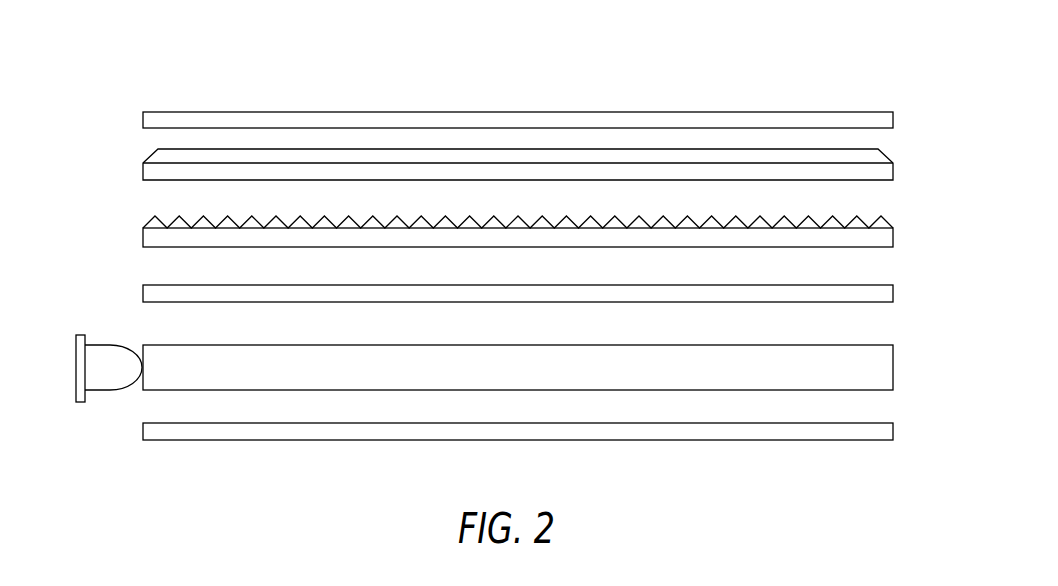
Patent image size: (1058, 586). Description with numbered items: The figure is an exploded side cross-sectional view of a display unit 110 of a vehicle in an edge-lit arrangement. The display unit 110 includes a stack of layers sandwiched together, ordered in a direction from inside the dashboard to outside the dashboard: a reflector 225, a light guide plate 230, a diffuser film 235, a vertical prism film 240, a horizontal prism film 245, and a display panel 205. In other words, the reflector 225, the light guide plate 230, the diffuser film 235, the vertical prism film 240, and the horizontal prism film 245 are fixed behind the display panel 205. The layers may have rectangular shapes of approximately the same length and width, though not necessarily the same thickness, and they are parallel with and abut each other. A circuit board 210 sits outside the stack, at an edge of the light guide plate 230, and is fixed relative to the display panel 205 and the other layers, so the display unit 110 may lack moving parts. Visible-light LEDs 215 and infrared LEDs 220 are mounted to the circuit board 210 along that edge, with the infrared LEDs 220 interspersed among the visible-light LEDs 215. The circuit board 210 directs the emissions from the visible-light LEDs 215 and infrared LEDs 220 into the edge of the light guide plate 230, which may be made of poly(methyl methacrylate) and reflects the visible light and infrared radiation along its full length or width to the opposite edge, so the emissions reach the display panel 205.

The display unit 110 is at (736, 71).
The display panel 205 is at (373, 112).
The horizontal prism film 245 is at (893, 163).
The vertical prism film 240 is at (893, 229).
The diffuser film 235 is at (893, 287).
The light guide plate 230 is at (893, 348).
The reflector 225 is at (893, 425).
The circuit board 210 is at (77, 378).
The visible-light LEDs 215 is at (101, 343).
The infrared LEDs 220 is at (93, 325).